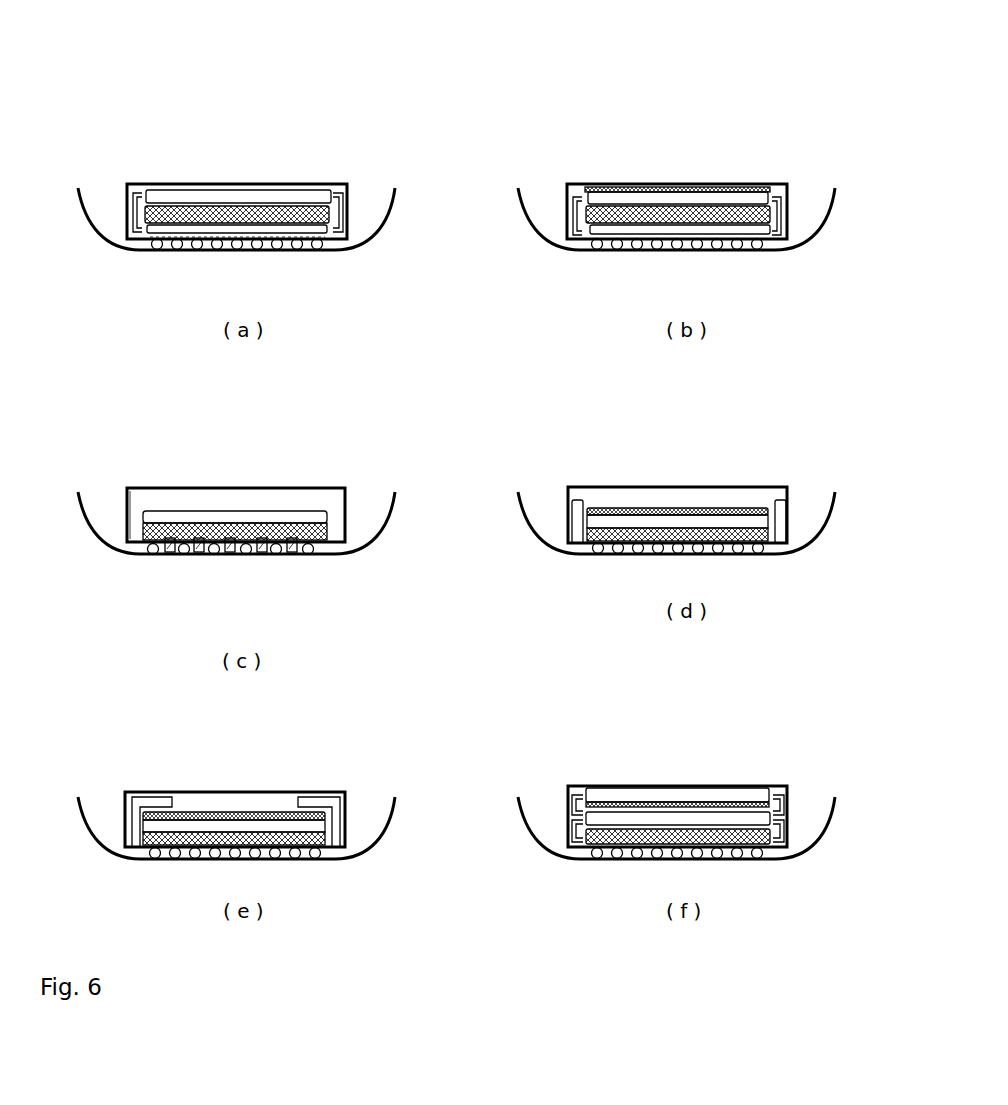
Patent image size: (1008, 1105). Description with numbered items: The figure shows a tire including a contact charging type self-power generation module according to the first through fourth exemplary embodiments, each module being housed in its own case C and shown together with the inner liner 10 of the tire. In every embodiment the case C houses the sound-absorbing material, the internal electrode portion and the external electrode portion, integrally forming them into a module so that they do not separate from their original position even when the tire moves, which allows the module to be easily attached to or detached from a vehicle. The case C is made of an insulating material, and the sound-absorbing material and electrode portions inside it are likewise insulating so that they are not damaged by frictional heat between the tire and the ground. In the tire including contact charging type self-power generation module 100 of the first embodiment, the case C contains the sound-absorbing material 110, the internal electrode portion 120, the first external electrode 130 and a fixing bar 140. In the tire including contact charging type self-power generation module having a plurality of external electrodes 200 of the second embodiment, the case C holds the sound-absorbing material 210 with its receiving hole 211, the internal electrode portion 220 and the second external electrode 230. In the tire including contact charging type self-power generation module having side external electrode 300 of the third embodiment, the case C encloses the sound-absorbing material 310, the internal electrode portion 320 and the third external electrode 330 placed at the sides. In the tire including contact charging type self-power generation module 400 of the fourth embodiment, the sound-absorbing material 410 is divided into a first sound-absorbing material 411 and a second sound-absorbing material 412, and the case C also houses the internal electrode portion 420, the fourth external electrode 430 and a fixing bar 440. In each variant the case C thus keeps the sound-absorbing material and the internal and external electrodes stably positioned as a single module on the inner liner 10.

The inner liner 10 is at (385, 225).
The case C is at (195, 185).
The tire including contact charging type self-power generation module 100 is at (505, 121).
The sound-absorbing material 110 is at (140, 210).
The internal electrode portion 120 is at (150, 232).
The first external electrode 130 is at (255, 190).
The fixing bar 140 is at (133, 195).
The tire including contact charging type self-power generation module having a plura 200 is at (282, 439).
The sound-absorbing material 210 is at (308, 510).
The receiving hole 211 is at (150, 507).
The internal electrode portion 220 is at (260, 510).
The second external electrode 230 is at (292, 553).
The tire including contact charging type self-power generation module having side ex 300 is at (504, 583).
The sound-absorbing material 310 is at (660, 508).
The internal electrode portion 320 is at (727, 515).
The third external electrode 330 is at (563, 490).
The tire including contact charging type self-power generation module 400 is at (725, 729).
The sound-absorbing material 410 is at (622, 780).
The first sound-absorbing material 411 is at (635, 834).
The second sound-absorbing material 412 is at (583, 790).
The internal electrode portion 420 is at (650, 795).
The fourth external electrode 430 is at (702, 818).
The fixing bar 440 is at (577, 812).